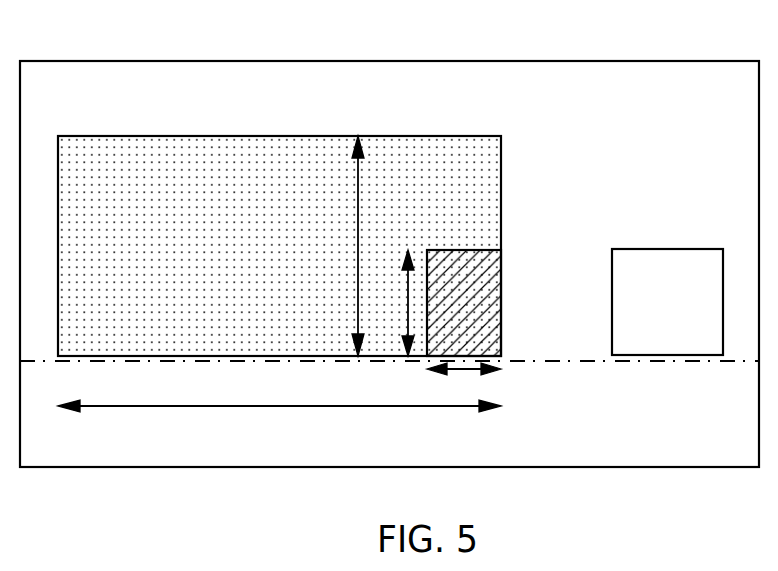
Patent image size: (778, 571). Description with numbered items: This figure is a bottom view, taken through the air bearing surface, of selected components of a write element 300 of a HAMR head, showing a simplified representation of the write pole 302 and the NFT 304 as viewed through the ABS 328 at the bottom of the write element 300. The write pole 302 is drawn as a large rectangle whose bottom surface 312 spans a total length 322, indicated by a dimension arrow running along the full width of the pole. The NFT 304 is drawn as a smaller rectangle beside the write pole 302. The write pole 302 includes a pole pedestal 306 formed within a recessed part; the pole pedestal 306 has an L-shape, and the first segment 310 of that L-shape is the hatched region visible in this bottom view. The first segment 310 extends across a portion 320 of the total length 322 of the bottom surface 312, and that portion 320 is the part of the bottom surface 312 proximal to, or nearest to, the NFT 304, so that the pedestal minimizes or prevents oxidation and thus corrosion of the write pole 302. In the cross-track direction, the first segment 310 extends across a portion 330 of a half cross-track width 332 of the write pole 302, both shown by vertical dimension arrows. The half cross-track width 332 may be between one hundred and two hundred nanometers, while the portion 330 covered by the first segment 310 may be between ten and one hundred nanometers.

The write element 300 is at (371, 61).
The write pole 302 is at (222, 136).
The NFT 304 is at (632, 249).
The pole pedestal 306 is at (443, 136).
The first segment 310 is at (488, 272).
The bottom surface 312 is at (146, 160).
The portion 320 is at (464, 382).
The total length 322 is at (279, 419).
The ABS 328 is at (643, 87).
The portion 330 is at (390, 303).
The half cross-track width 332 is at (342, 246).